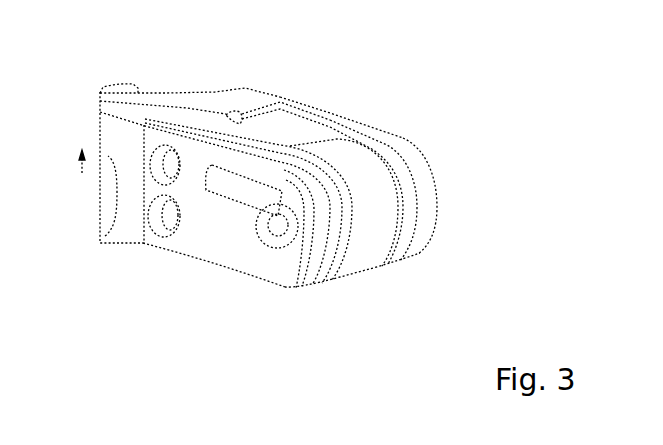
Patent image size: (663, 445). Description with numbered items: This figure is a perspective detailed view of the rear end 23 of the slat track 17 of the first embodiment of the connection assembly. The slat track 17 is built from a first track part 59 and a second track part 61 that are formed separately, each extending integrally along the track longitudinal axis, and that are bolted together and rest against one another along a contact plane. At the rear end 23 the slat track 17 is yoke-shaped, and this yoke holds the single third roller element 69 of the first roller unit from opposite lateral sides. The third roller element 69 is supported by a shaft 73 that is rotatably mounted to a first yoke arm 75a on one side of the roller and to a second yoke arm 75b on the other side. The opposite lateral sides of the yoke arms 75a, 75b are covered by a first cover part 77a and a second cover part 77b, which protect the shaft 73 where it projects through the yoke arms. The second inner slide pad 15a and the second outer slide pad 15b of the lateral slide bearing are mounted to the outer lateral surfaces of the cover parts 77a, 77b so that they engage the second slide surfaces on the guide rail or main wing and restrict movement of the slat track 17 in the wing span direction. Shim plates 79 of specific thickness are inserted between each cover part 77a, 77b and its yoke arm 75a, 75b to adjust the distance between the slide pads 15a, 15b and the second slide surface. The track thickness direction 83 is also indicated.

The slat track 17 is at (167, 93).
The second track part 61 is at (247, 90).
The second cover part 77b is at (332, 112).
The second outer slide pad 15b is at (433, 178).
The track thickness direction 83 is at (80, 173).
The first track part 59 is at (130, 232).
The first cover part 77a is at (189, 258).
The second inner slide pad 15a is at (233, 200).
The shaft 73 is at (267, 248).
The shim plates 79 is at (311, 288).
The first yoke arm 75a is at (327, 284).
The third roller element 69 is at (363, 268).
The second yoke arm 75b is at (387, 264).
The rear end 23 is at (400, 262).